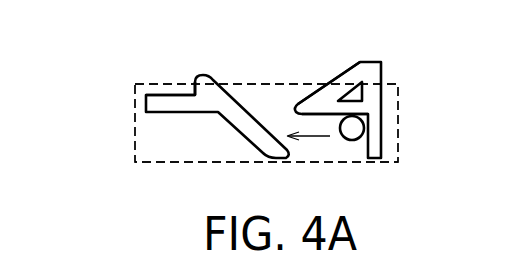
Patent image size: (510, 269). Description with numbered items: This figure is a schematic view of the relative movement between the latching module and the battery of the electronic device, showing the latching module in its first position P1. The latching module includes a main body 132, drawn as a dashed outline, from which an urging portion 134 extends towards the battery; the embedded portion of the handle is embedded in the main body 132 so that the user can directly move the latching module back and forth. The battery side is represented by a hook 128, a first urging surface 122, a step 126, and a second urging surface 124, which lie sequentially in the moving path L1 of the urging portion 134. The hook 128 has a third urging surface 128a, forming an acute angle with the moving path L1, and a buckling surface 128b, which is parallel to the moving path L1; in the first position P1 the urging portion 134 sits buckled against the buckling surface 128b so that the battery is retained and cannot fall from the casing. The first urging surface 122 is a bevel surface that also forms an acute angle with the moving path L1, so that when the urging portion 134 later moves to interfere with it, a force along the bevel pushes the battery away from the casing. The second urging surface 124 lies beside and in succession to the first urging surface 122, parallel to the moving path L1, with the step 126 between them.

The first urging surface 122 is at (241, 106).
The second urging surface 124 is at (155, 94).
The step 126 is at (194, 90).
The hook 128 is at (374, 62).
The third urging surface 128a is at (332, 81).
The buckling surface 128b is at (318, 125).
The main body 132 is at (398, 94).
The urging portion 134 is at (351, 132).
The first position P1 is at (135, 147).
The moving path L1 is at (308, 147).